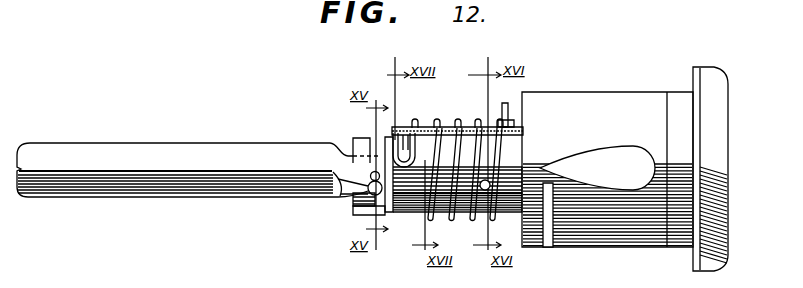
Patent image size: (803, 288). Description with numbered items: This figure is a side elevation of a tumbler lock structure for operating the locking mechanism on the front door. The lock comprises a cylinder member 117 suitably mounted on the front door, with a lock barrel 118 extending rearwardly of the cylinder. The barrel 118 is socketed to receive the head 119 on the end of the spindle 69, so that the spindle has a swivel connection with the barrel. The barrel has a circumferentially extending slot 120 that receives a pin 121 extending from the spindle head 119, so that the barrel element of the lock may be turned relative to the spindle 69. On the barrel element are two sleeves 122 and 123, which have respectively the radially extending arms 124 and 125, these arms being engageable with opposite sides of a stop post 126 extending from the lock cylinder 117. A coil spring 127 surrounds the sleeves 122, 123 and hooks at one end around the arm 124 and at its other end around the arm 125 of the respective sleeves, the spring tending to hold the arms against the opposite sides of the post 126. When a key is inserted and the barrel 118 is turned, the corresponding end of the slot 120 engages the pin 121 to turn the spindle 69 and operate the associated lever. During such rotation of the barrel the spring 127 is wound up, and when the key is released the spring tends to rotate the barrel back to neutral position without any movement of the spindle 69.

The spindle 69 is at (200, 132).
The cylinder member 117 is at (618, 108).
The lock barrel 118 is at (358, 208).
The head 119 is at (371, 154).
The slot 120 is at (352, 188).
The pin 121 is at (358, 198).
The sleeve 122 is at (512, 160).
The sleeve 123 is at (416, 196).
The arm 124 is at (508, 103).
The arm 125 is at (405, 140).
The stop post 126 is at (455, 124).
The coil spring 127 is at (455, 220).